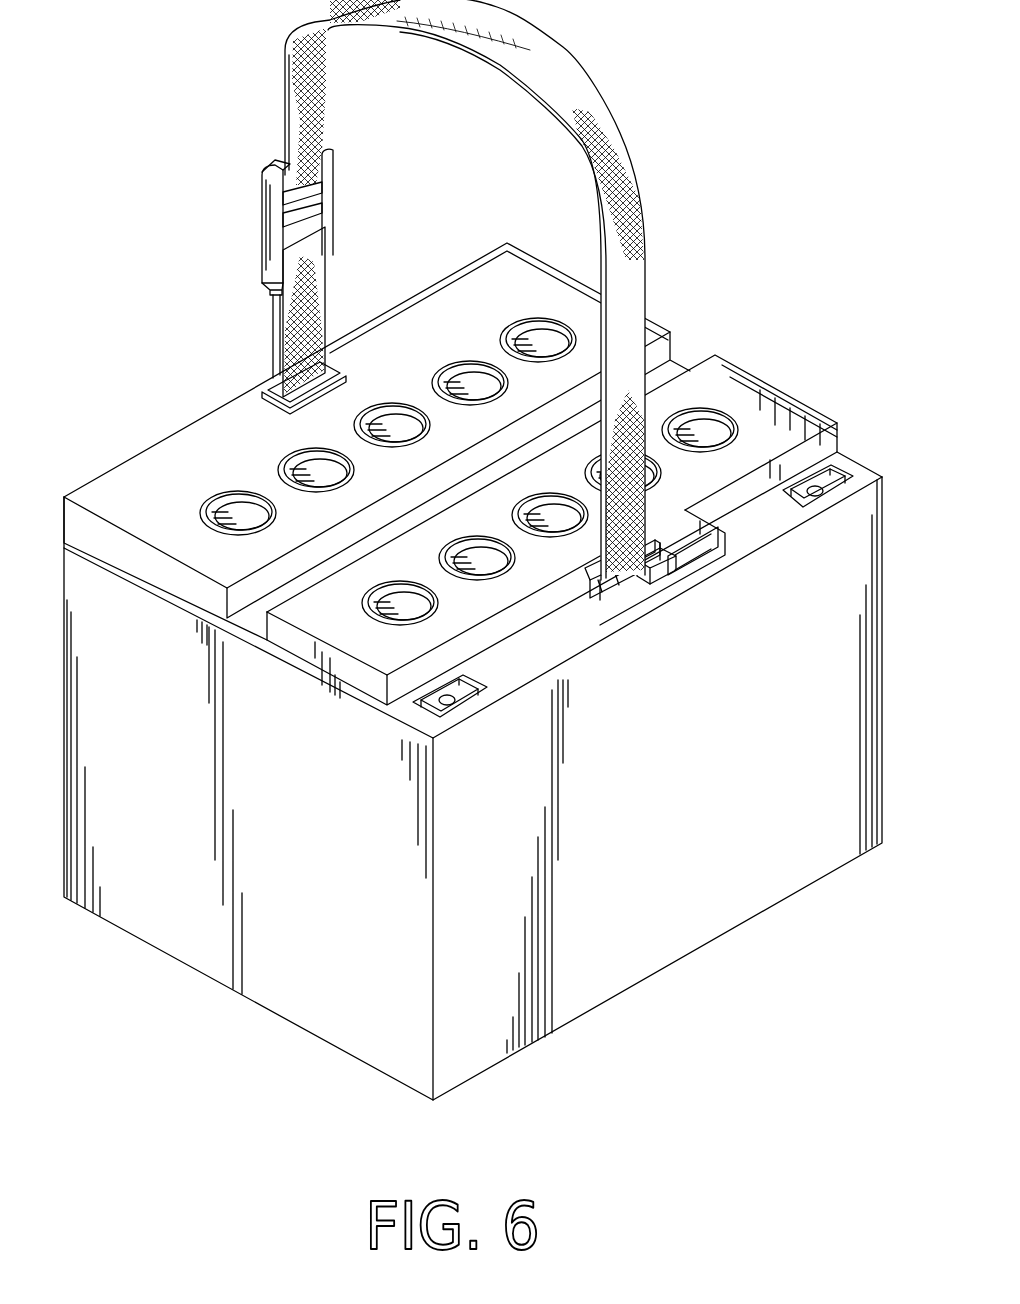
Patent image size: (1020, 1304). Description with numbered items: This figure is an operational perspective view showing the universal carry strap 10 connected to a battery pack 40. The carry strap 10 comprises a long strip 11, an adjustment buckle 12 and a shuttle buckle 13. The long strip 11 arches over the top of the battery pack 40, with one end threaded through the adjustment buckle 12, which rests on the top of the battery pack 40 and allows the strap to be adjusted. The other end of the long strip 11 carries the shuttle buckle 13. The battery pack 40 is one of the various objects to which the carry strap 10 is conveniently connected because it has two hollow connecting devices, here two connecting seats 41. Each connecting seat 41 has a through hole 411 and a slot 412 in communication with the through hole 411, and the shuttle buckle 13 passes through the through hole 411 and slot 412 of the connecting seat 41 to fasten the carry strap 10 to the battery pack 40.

The universal carry strap 10 is at (604, 80).
The long strip 11 is at (298, 70).
The adjustment buckle 12 is at (332, 193).
The shuttle buckle 13 is at (590, 588).
The battery pack 40 is at (736, 897).
The connecting seat 41 is at (650, 604).
The through hole 411 is at (658, 537).
The slot 412 is at (648, 578).